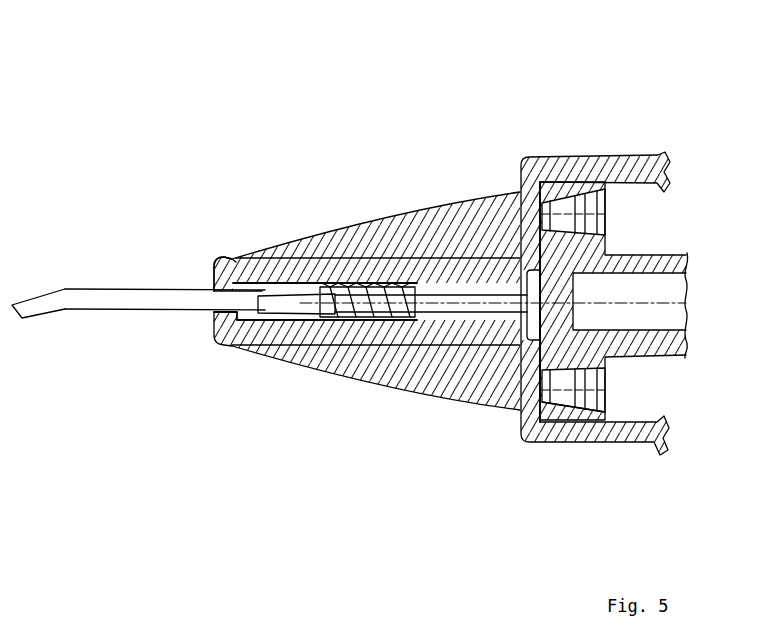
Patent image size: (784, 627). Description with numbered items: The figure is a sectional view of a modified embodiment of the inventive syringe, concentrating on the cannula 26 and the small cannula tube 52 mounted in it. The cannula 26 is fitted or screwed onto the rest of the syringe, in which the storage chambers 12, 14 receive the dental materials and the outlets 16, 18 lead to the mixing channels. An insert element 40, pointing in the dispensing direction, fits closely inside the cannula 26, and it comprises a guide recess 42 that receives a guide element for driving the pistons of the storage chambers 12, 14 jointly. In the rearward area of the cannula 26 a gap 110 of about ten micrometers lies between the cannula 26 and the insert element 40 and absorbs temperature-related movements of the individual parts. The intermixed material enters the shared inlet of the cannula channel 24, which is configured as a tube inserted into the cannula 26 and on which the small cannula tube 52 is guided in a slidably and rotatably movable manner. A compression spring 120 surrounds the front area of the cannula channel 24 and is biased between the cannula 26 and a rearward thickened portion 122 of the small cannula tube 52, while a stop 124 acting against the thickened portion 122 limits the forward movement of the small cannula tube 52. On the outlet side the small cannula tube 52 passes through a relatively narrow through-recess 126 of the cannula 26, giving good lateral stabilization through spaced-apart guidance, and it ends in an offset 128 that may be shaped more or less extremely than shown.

The storage chamber 12 is at (660, 237).
The storage chamber 14 is at (643, 406).
The outlet 16 is at (560, 217).
The outlet 18 is at (563, 393).
The cannula channel 24 is at (433, 297).
The cannula 26 is at (465, 333).
The insert element 40 is at (645, 347).
The guide recess 42 is at (667, 317).
The small cannula tube 52 is at (156, 306).
The gap 110 is at (497, 248).
The compression spring 120 is at (370, 307).
The thickened portion 122 is at (310, 290).
The stop 124 is at (307, 315).
The through-recess 126 is at (227, 267).
The offset 128 is at (32, 302).